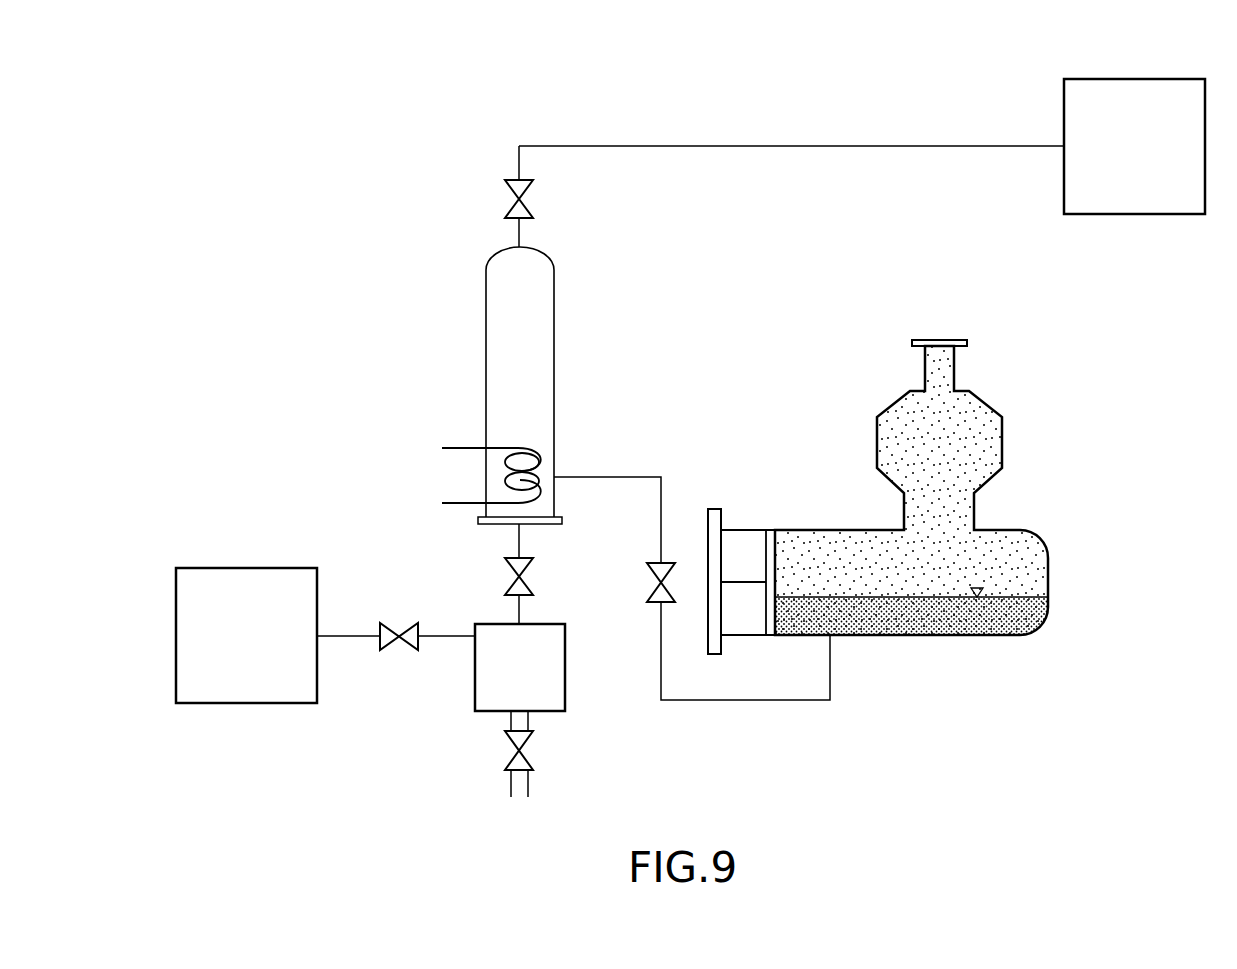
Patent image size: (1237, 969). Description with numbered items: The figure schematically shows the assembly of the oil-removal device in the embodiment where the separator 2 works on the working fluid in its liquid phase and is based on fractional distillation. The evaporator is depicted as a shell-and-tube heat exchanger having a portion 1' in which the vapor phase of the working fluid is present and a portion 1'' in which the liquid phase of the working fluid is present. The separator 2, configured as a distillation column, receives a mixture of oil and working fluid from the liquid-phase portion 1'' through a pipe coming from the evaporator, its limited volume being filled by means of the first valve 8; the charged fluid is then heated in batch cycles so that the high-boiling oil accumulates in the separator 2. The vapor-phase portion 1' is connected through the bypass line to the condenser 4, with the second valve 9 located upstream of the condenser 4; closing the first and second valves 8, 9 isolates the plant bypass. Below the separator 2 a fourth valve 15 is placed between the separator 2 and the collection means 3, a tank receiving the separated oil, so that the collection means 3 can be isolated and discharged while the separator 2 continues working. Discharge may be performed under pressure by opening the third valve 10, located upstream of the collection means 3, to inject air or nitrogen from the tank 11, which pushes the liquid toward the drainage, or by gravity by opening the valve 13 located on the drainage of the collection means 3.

The vapor-phase portion of the evaporator 1' is at (904, 497).
The liquid-phase portion of the evaporator 1'' is at (925, 652).
The separator 2 is at (521, 372).
The collection means 3 is at (529, 683).
The condenser 4 is at (1146, 160).
The first valve 8 is at (652, 598).
The second valve 9 is at (512, 192).
The third valve 10 is at (388, 630).
The tank for air or nitrogen 11 is at (265, 651).
The valve on the drainage 13 is at (525, 742).
The fourth valve 15 is at (507, 593).